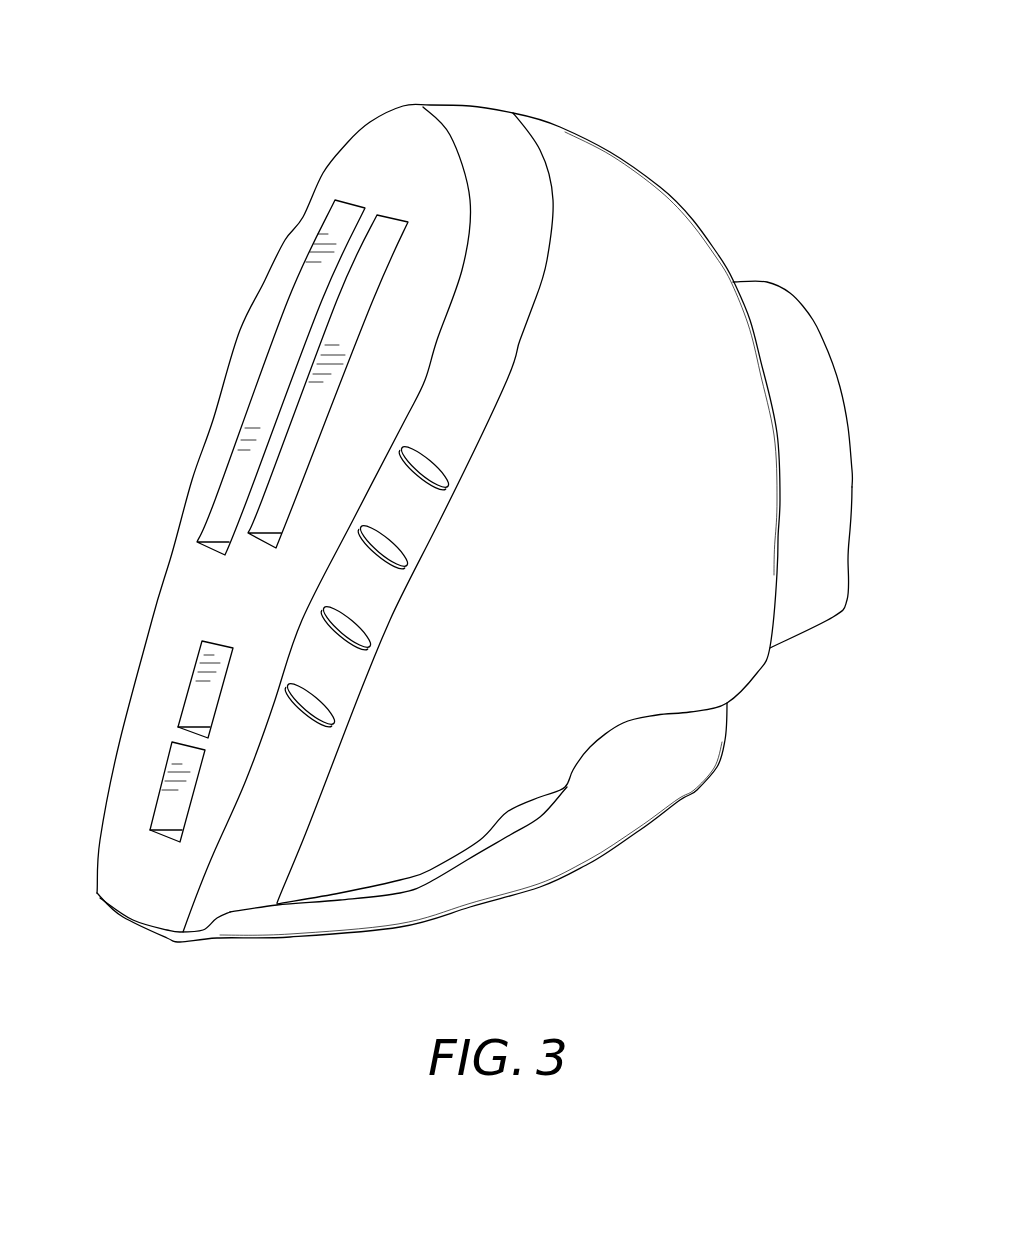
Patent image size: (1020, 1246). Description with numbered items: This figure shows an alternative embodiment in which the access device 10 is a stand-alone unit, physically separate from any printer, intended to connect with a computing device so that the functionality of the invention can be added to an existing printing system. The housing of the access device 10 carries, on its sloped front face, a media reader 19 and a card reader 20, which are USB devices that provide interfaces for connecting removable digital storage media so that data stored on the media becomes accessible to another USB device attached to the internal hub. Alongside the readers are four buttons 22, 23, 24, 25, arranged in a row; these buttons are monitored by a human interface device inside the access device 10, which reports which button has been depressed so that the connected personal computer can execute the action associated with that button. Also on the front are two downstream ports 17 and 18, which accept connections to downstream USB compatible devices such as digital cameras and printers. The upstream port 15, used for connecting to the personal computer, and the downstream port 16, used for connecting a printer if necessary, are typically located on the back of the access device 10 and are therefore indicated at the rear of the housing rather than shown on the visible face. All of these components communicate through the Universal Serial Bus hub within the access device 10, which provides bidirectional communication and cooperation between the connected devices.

The access device 10 is at (606, 90).
The port 15 is at (822, 338).
The port 16 is at (852, 483).
The port 17 is at (193, 683).
The port 18 is at (158, 782).
The media reader 19 is at (343, 253).
The card reader 20 is at (345, 310).
The button 22 is at (448, 472).
The button 23 is at (408, 562).
The button 24 is at (373, 643).
The button 25 is at (335, 720).